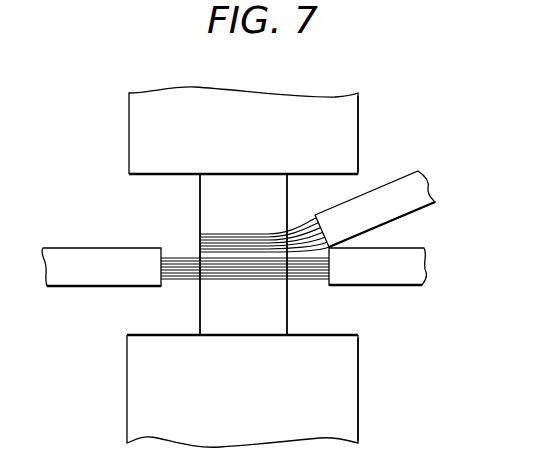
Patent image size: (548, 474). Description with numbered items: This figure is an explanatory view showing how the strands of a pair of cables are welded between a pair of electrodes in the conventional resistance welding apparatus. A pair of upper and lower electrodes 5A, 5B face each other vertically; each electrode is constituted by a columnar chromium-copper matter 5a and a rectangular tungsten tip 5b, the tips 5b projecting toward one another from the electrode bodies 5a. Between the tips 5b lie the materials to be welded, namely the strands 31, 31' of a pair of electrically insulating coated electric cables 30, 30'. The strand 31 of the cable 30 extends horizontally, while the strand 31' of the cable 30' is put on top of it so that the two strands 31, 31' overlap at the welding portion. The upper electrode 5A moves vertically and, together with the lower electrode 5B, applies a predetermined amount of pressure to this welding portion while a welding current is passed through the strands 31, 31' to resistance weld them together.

The upper electrode 5A is at (117, 134).
The lower electrode 5B is at (115, 409).
The columnar chromium-copper matter 5a is at (359, 112).
The rectangular tungsten tip 5b is at (199, 193).
The electrically insulating coated electric cable 30 is at (101, 304).
The electrically insulating coated electric cable 30' is at (400, 180).
The strand 31 is at (294, 299).
The strand 31' is at (213, 229).